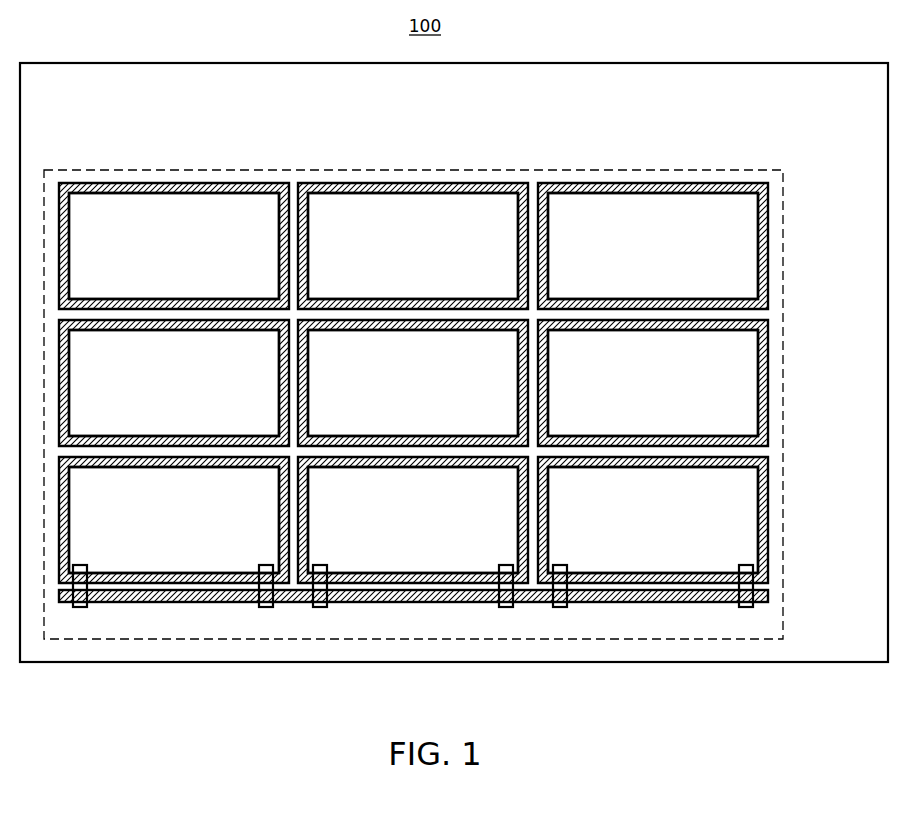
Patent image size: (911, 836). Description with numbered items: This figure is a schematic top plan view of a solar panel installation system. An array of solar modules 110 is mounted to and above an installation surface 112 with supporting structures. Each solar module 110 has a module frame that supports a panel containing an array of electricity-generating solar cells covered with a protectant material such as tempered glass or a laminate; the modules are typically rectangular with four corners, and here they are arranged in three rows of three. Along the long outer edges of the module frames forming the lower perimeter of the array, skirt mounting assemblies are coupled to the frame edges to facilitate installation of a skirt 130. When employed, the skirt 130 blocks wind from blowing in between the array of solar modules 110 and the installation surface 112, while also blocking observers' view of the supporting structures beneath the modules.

The solar module 110 is at (368, 170).
The installation surface 112 is at (847, 125).
The skirt 130 is at (770, 595).